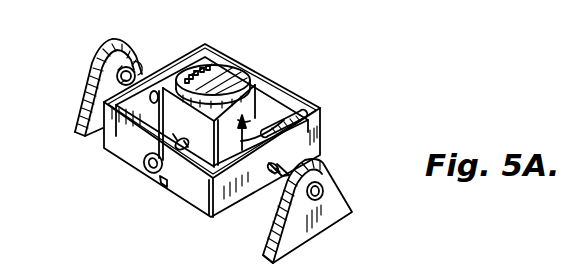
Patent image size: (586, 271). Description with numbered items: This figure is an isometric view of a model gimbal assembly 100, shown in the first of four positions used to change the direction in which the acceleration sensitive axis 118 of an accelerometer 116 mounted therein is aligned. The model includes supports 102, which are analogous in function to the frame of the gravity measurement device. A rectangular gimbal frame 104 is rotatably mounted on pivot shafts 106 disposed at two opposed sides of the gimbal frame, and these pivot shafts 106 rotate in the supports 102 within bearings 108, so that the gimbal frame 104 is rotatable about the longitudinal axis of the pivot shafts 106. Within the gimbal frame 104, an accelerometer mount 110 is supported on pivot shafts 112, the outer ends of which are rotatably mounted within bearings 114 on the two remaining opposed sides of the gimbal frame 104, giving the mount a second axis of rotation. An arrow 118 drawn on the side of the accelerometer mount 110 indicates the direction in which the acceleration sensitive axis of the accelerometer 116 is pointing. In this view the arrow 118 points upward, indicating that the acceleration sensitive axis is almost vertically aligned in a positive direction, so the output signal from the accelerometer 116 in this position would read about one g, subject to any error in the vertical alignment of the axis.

The gimbal assembly 100 is at (113, 173).
The supports 102 is at (90, 79).
The gimbal frame 104 is at (313, 148).
The pivot shafts 106 is at (140, 66).
The bearings 108 is at (133, 72).
The accelerometer mount 110 is at (250, 121).
The pivot shafts 112 is at (258, 98).
The bearings 114 is at (167, 183).
The accelerometer 116 is at (226, 72).
The acceleration sensitive axis 118 is at (310, 116).